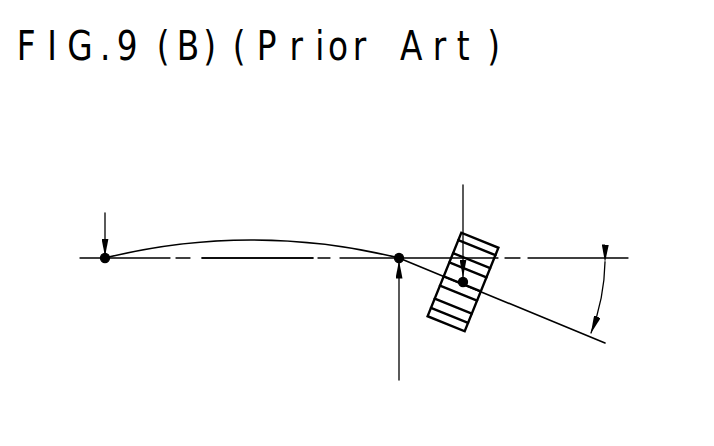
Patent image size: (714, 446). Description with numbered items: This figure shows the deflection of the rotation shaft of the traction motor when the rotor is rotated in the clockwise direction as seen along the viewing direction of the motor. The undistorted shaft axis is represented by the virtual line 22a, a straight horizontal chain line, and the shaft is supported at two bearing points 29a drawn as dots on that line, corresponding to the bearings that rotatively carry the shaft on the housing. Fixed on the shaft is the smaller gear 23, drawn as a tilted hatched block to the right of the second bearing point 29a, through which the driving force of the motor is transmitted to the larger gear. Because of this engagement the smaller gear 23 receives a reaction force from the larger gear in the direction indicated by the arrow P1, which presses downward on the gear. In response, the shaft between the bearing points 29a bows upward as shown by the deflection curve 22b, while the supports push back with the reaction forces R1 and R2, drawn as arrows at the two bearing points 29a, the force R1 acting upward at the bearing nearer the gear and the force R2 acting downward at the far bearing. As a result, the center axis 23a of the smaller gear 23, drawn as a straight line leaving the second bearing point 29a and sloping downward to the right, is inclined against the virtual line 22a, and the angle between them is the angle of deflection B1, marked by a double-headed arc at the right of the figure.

The virtual line 22a is at (259, 259).
The deflection curve 22b is at (307, 240).
The bearing point 29a is at (105, 262).
The smaller gear 23 is at (460, 332).
The center axis 23a is at (558, 324).
The reaction force R1 is at (395, 342).
The reaction force R2 is at (106, 214).
The reaction force direction P1 is at (469, 218).
The angle of deflection B1 is at (619, 301).